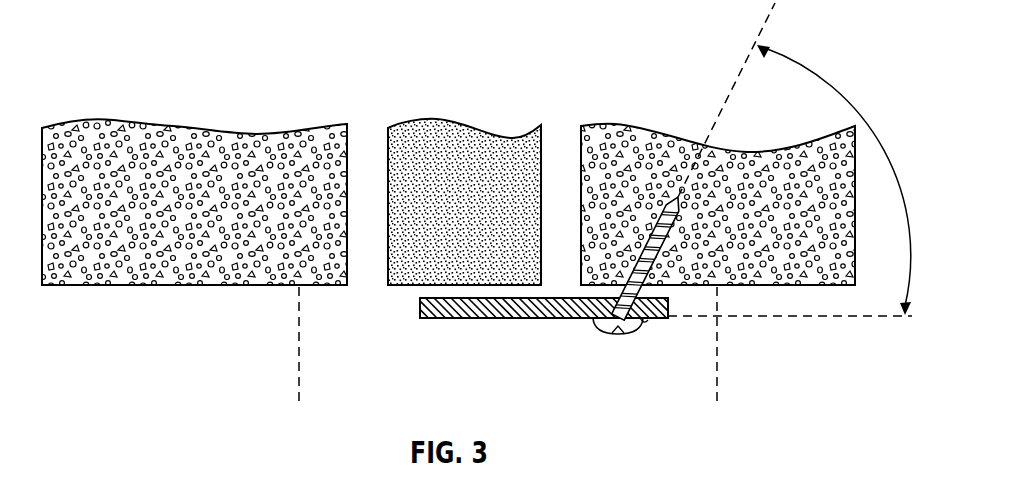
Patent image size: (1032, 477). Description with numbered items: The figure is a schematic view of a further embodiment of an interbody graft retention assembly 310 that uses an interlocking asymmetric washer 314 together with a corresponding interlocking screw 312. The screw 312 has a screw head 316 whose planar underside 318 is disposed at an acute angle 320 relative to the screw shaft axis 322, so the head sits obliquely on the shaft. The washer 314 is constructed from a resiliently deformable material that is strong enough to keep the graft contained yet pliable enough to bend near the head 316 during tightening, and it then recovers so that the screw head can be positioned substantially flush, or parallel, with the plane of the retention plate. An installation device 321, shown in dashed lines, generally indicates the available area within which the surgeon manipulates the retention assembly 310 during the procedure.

The interbody graft retention assembly 310 is at (548, 375).
The interlocking screw 312 is at (666, 242).
The washer 314 is at (420, 299).
The screw head 316 is at (603, 331).
The planar underside 318 is at (647, 318).
The acute angle 320 is at (811, 69).
The installation device 321 is at (298, 336).
The screw shaft axis 322 is at (727, 98).